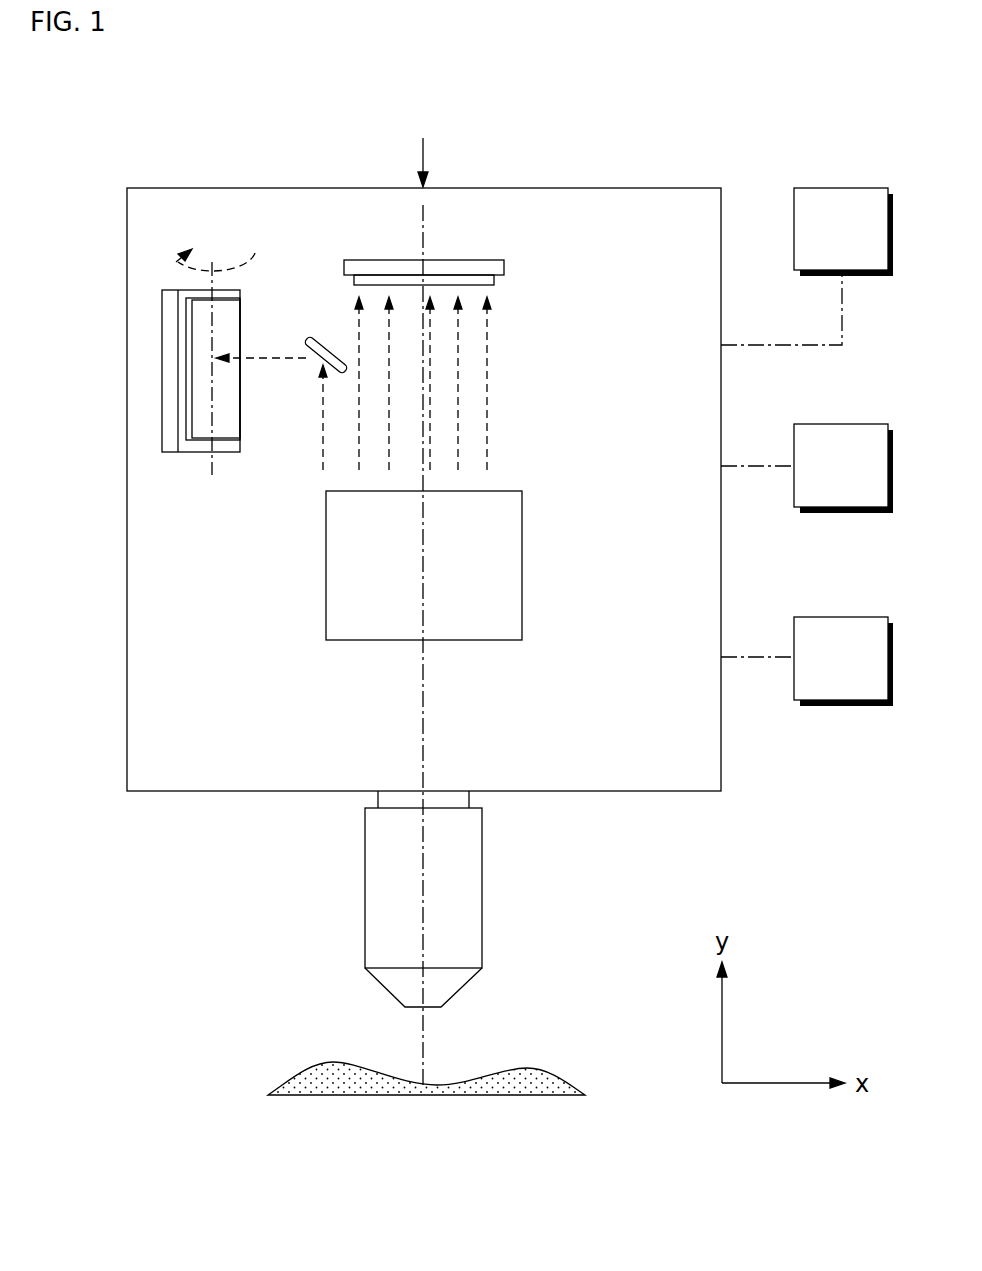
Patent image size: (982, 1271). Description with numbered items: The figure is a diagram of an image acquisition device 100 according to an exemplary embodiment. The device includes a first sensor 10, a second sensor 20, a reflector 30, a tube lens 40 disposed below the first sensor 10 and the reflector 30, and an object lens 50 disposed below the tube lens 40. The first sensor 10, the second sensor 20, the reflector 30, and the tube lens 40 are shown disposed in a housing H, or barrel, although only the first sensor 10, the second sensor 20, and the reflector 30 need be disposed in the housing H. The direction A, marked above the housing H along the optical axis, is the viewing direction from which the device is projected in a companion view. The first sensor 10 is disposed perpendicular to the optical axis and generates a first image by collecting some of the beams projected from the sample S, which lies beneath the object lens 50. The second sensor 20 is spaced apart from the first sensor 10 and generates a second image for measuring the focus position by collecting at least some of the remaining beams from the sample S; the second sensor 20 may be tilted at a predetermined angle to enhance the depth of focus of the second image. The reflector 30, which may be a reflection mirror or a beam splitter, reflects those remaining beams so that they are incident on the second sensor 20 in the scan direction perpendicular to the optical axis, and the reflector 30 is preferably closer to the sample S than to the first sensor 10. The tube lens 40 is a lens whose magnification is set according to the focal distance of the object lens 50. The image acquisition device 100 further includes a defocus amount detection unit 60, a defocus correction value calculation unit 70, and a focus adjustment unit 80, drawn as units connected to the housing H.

The image acquisition device 100 is at (633, 110).
The housing H is at (177, 187).
The direction A is at (423, 147).
The first sensor 10 is at (390, 260).
The second sensor 20 is at (162, 372).
The reflector 30 is at (323, 340).
The tube lens 40 is at (326, 567).
The object lens 50 is at (365, 888).
The defocus amount detection unit 60 is at (807, 266).
The defocus correction value calculation unit 70 is at (807, 468).
The focus adjustment unit 80 is at (807, 661).
The sample S is at (318, 1065).